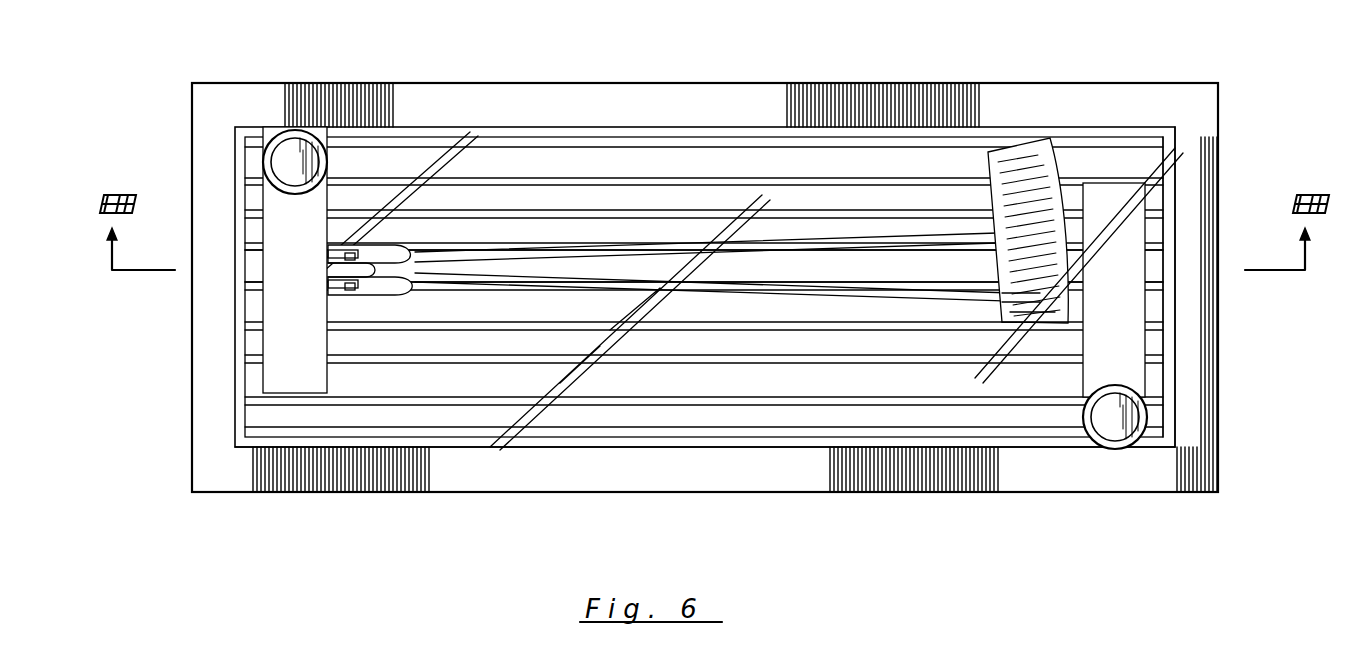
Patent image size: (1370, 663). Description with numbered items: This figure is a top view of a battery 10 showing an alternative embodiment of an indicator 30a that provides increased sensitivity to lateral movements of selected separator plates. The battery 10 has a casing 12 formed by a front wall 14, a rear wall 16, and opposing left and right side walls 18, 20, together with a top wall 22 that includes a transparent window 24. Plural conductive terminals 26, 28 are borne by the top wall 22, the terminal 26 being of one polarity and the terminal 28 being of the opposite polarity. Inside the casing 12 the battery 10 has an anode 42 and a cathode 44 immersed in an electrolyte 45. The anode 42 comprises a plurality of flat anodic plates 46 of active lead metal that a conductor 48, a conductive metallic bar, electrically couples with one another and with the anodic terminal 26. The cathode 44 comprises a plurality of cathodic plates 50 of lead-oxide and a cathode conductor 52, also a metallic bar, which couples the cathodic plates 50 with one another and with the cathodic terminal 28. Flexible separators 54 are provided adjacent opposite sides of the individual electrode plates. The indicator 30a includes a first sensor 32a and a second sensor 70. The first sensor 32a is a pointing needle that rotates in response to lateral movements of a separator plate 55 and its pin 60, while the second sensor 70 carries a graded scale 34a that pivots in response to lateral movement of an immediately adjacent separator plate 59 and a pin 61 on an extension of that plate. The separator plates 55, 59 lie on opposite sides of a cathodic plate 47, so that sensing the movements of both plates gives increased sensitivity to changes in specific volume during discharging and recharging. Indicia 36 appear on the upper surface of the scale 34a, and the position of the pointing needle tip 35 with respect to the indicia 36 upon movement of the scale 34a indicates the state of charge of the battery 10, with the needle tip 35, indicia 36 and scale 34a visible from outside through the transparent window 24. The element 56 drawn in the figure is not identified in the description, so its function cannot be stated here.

The battery 10 is at (232, 48).
The casing 12 is at (868, 82).
The front wall 14 is at (585, 478).
The rear wall 16 is at (683, 105).
The left side wall 18 is at (210, 352).
The right side wall 20 is at (1200, 150).
The top wall 22 is at (605, 448).
The transparent window 24 is at (465, 130).
The anodic terminal 26 is at (280, 158).
The cathodic terminal 28 is at (1102, 415).
The indicator 30a is at (1136, 57).
The first sensor 32a is at (817, 295).
The graded scale 34a is at (1047, 327).
The pointing needle tip 35 is at (1020, 330).
The indicia 36 is at (1002, 150).
The anode 42 is at (172, 127).
The cathode 44 is at (1252, 323).
The electrolyte 45 is at (612, 132).
The anodic plates 46 is at (1155, 235).
The cathodic plate 47 is at (708, 268).
The conductor 48 is at (296, 373).
The cathodic plates 50 is at (253, 272).
The cathode conductor 52 is at (1107, 200).
The separators 54 is at (557, 165).
The separator plate 55 is at (920, 252).
The clamp 56 is at (370, 275).
The separator plate 59 is at (533, 285).
The pin 60 is at (350, 248).
The pin 61 is at (362, 292).
The second sensor 70 is at (750, 243).